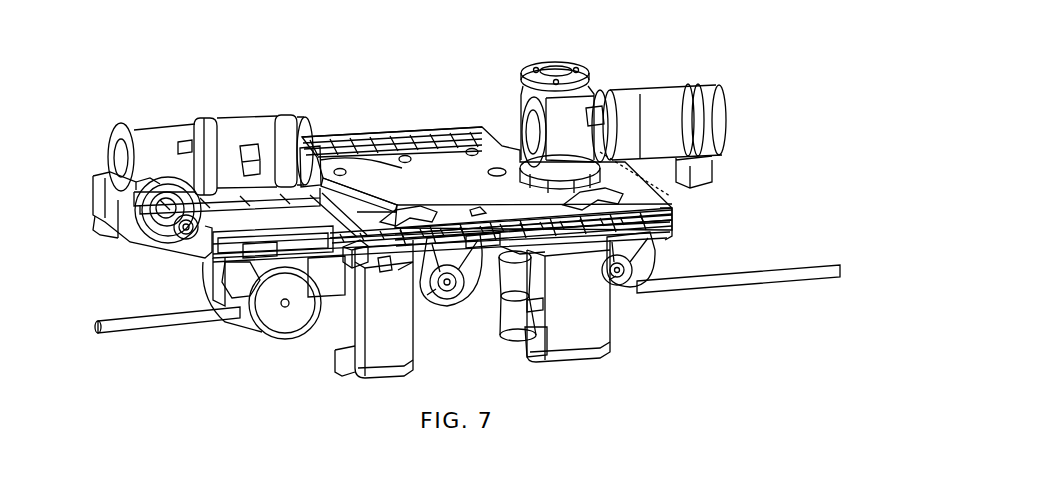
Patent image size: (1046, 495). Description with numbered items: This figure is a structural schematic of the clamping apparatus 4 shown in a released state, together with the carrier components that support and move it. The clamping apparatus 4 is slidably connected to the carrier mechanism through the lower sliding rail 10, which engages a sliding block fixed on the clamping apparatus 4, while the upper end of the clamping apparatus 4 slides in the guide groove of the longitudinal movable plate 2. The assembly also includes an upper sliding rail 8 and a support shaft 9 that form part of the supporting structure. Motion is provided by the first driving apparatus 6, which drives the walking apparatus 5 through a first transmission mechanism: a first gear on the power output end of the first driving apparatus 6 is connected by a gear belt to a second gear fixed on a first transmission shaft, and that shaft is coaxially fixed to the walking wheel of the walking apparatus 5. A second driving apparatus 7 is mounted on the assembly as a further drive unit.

The longitudinal movable plate 2 is at (430, 163).
The clamping apparatus 4 is at (392, 312).
The walking apparatus 5 is at (217, 278).
The first driving apparatus 6 is at (146, 143).
The second driving apparatus 7 is at (642, 102).
The upper sliding rail 8 is at (518, 218).
The support shaft 9 is at (477, 243).
The lower sliding rail 10 is at (377, 262).